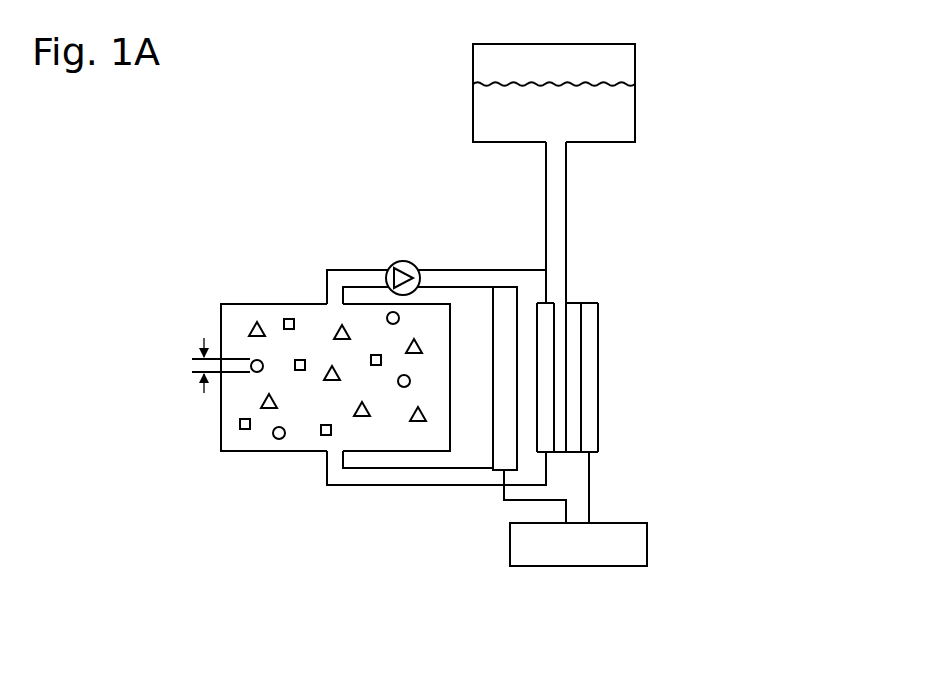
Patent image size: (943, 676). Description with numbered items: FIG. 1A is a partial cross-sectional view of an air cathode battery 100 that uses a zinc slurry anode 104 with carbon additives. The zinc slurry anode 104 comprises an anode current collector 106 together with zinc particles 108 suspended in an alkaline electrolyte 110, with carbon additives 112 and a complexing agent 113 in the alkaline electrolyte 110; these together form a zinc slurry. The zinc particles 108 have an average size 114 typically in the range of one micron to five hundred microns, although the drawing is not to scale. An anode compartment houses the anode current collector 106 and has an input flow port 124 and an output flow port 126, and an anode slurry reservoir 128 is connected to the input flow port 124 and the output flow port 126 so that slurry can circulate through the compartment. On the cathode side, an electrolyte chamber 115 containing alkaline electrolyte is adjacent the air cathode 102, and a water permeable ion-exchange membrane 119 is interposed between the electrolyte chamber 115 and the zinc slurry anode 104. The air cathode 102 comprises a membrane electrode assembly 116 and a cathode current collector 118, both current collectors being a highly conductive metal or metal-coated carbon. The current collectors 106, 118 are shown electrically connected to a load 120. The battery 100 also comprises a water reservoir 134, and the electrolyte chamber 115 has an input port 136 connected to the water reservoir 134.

The battery 100 is at (736, 177).
The air cathode 102 is at (652, 356).
The zinc slurry anode 104 is at (204, 416).
The current collector 106 is at (503, 457).
The zinc particles 108 is at (252, 324).
The alkaline electrolyte 110 is at (364, 438).
The carbon additives 112 is at (277, 440).
The complexing agent 113 is at (292, 318).
The average size 114 is at (203, 349).
The electrolyte chamber 115 is at (560, 296).
The membrane electrode assembly 116 is at (652, 348).
The current collector 118 is at (705, 381).
The water permeable ion-exchange membrane 119 is at (543, 308).
The load 120 is at (578, 544).
The input flow port 124 is at (386, 266).
The output flow port 126 is at (385, 487).
The anode slurry reservoir 128 is at (221, 340).
The water reservoir 134 is at (473, 122).
The input port 136 is at (546, 188).